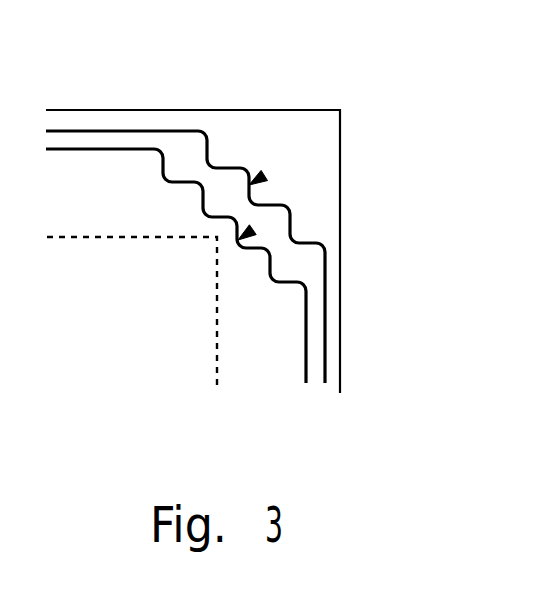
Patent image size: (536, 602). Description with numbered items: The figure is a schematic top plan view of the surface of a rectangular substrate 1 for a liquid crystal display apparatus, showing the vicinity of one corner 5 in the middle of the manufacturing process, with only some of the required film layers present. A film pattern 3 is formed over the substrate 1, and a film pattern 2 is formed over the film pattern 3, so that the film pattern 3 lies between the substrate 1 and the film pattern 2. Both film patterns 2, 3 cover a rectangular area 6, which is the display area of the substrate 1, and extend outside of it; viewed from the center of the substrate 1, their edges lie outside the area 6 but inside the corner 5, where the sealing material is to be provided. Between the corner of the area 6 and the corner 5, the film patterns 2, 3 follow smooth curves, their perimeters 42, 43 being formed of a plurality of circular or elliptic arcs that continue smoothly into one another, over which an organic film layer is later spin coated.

The substrate 1 is at (252, 122).
The film pattern 2 is at (78, 165).
The film pattern 3 is at (177, 138).
The corner 5 is at (327, 123).
The rectangular area 6 is at (198, 321).
The perimeter 42 is at (253, 230).
The perimeter 43 is at (264, 176).